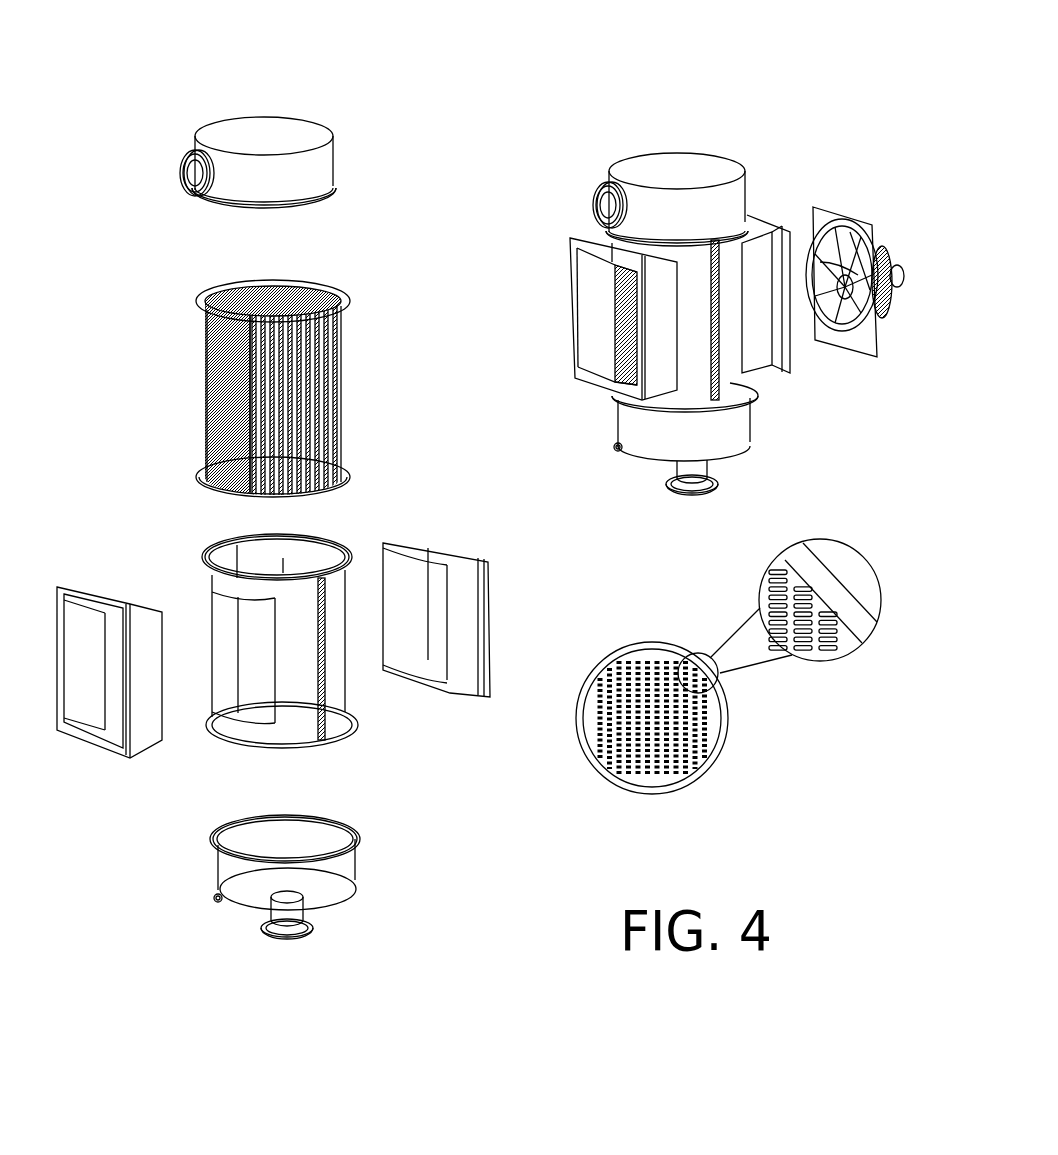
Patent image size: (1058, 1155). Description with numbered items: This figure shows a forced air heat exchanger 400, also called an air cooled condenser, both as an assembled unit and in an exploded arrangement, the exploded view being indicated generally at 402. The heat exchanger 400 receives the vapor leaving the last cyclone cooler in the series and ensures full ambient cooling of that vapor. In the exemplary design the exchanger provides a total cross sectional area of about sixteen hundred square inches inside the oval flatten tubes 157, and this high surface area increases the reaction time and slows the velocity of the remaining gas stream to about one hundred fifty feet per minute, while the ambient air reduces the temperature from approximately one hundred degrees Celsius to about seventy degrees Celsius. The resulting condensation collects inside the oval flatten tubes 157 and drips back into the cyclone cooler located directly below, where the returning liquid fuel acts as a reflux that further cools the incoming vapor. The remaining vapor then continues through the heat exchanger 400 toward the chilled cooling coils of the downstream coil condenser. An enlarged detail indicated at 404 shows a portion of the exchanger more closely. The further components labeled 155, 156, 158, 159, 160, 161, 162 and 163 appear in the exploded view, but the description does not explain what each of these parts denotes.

The exploded view of filter assembly 402 is at (213, 90).
The forced air heat exchanger 400 is at (672, 170).
The perforated filter screen detail 404 is at (744, 763).
The port 155 is at (187, 178).
The cap 156 is at (317, 165).
The oval flatten tubes 157 is at (320, 290).
The filter frame 158 is at (227, 550).
The duct 159 is at (148, 727).
The base 160 is at (328, 883).
The drain fitting 161 is at (290, 937).
The fastener 162 is at (213, 900).
The fan 163 is at (827, 218).